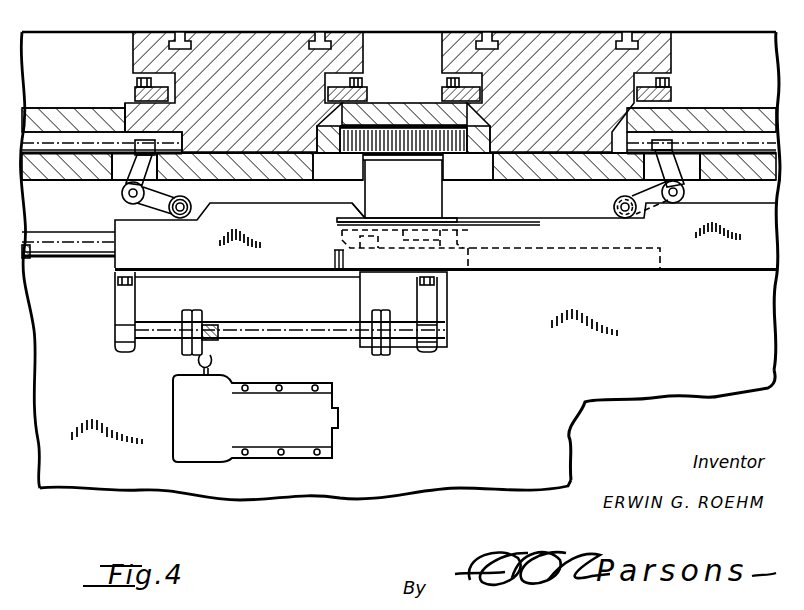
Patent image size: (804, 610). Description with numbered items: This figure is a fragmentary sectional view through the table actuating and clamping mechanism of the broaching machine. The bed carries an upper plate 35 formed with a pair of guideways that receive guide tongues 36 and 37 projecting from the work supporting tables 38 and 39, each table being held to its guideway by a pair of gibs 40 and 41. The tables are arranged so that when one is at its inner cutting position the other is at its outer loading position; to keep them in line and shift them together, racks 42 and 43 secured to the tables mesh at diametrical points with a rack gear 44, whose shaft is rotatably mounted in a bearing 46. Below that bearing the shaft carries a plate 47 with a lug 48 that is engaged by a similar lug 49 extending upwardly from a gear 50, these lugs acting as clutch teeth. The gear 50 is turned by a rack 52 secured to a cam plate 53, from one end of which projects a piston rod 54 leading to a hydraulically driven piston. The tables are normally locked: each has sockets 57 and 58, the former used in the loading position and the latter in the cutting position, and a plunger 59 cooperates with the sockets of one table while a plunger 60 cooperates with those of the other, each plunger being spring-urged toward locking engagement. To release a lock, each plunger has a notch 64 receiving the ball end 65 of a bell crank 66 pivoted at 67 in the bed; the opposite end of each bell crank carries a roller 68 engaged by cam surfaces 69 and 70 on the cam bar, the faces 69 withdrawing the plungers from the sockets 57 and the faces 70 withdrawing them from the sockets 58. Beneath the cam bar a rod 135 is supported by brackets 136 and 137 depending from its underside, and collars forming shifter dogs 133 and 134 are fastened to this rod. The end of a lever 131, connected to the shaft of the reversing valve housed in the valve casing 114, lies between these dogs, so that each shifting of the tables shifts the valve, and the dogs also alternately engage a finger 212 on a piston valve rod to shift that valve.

The upper plate 35 is at (752, 108).
The guide tongue 36 is at (572, 152).
The guide tongue 37 is at (264, 168).
The work supporting table 38 is at (590, 32).
The work supporting table 39 is at (299, 14).
The gib 40 is at (449, 90).
The gib 41 is at (137, 88).
The rack 42 is at (466, 166).
The rack 43 is at (328, 166).
The rack gear 44 is at (396, 151).
The bearing 46 is at (432, 206).
The plate 47 is at (468, 223).
The lug 48 is at (345, 237).
The lug 49 is at (470, 238).
The gear 50 is at (325, 258).
The rack 52 is at (586, 240).
The cam plate 53 is at (701, 268).
The piston rod 54 is at (62, 249).
The socket 57 is at (199, 170).
The socket 58 is at (622, 172).
The plunger 59 is at (40, 136).
The plunger 60 is at (697, 138).
The notch 64 is at (128, 106).
The ball end 65 is at (122, 180).
The bell crank 66 is at (128, 201).
The pivot 67 is at (122, 196).
The roller 68 is at (181, 218).
The cam surface 69 is at (192, 208).
The cam surface 70 is at (350, 206).
The valve casing 114 is at (177, 393).
The lever 131 is at (213, 364).
The shifter dog 133 is at (191, 310).
The shifter dog 134 is at (400, 302).
The rod 135 is at (339, 333).
The bracket 136 is at (438, 306).
The bracket 137 is at (117, 311).
The finger 212 is at (213, 327).